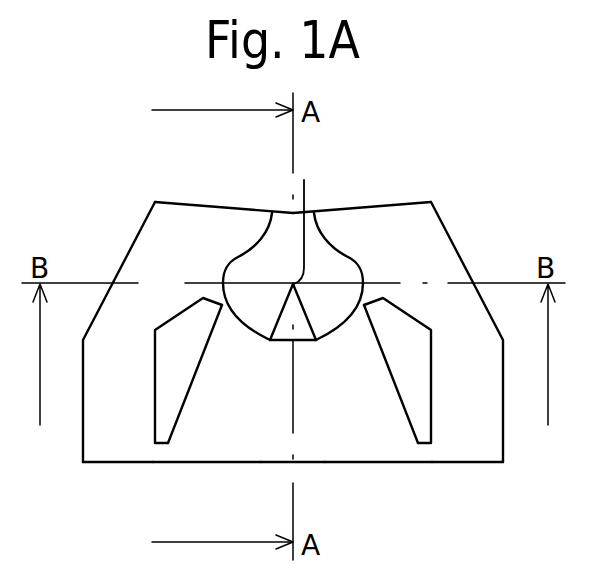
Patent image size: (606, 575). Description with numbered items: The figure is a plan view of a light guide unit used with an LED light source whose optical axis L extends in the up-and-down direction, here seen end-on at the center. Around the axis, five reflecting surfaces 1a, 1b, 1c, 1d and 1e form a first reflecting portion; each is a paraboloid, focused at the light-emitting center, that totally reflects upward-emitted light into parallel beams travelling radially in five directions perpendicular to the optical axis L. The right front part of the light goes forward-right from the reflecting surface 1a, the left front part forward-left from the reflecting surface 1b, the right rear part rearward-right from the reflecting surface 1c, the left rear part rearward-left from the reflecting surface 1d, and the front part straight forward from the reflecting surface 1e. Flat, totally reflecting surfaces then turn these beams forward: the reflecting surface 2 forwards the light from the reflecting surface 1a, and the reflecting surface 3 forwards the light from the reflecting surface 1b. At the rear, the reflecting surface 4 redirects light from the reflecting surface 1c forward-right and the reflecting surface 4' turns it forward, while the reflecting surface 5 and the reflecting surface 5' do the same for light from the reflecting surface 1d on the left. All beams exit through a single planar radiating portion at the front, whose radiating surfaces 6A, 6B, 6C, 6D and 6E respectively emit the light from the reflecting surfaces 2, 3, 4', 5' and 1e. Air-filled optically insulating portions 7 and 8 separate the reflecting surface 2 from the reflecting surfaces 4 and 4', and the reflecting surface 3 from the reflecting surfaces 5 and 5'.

The reflecting surface 1a is at (333, 317).
The reflecting surface 1b is at (273, 317).
The reflecting surface 1c is at (338, 277).
The reflecting surface 1d is at (280, 277).
The reflecting surface 1e is at (300, 333).
The reflecting surface 2 is at (389, 379).
The reflecting surface 3 is at (197, 379).
The reflecting surface 4 is at (362, 190).
The reflecting surface 5 is at (224, 188).
The reflecting surface 4' is at (475, 332).
The reflecting surface 5' is at (110, 332).
The radiating surface 6A is at (418, 471).
The radiating surface 6B is at (227, 471).
The radiating surface 6C is at (504, 471).
The radiating surface 6D is at (153, 471).
The radiating surface 6E is at (261, 471).
The optically insulating portion 7 is at (416, 369).
The optically insulating portion 8 is at (180, 366).
The optical axis L is at (304, 180).